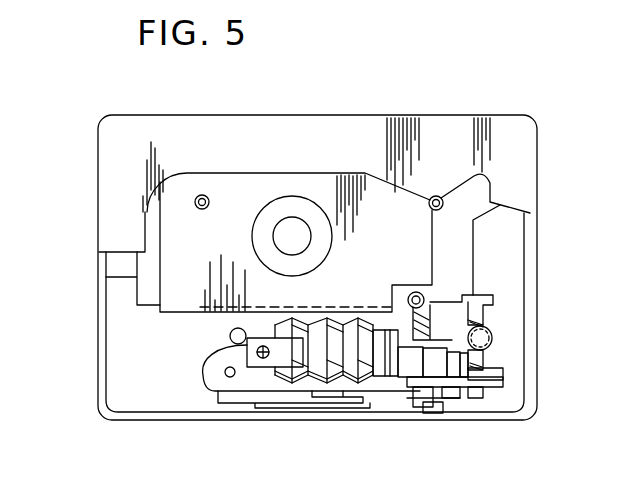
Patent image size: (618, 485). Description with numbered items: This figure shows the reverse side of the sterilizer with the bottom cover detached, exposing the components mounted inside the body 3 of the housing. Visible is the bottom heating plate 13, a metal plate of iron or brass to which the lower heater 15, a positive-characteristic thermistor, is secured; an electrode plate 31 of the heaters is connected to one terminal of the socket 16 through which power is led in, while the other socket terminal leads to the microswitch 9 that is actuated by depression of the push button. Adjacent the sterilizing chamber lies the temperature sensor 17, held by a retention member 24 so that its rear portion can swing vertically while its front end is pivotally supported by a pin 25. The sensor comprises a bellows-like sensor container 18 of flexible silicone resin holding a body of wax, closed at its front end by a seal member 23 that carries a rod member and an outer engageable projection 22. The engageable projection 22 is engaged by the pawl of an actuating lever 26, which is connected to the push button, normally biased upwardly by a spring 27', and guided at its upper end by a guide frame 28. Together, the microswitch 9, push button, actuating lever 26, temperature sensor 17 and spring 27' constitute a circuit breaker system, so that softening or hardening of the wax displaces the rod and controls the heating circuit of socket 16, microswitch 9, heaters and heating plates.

The body 3 is at (98, 301).
The microswitch 9 is at (483, 410).
The bottom heating plate 13 is at (233, 185).
The lower heater 15 is at (282, 207).
The electrode plate 31 is at (293, 228).
The socket 16 is at (283, 408).
The temperature sensor 17 is at (370, 390).
The sensor container 18 is at (323, 382).
The engageable projection 22 is at (485, 363).
The seal member 23 is at (400, 382).
The retention member 24 is at (263, 367).
The pin 25 is at (427, 407).
The actuating lever 26 is at (482, 372).
The spring 27' is at (510, 321).
The guide frame 28 is at (480, 395).